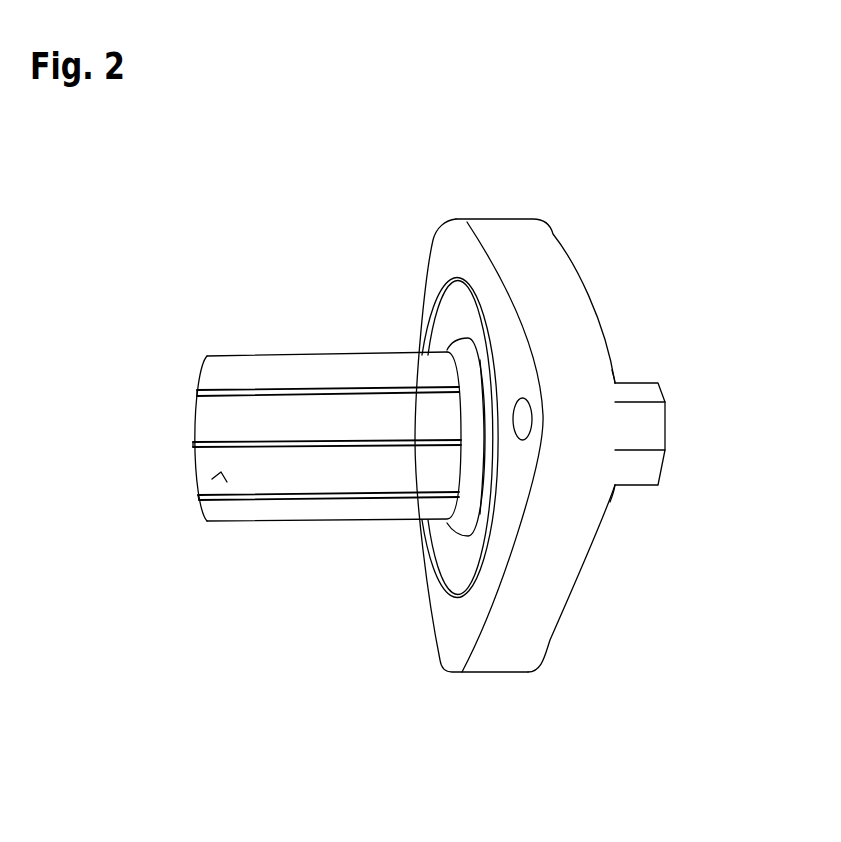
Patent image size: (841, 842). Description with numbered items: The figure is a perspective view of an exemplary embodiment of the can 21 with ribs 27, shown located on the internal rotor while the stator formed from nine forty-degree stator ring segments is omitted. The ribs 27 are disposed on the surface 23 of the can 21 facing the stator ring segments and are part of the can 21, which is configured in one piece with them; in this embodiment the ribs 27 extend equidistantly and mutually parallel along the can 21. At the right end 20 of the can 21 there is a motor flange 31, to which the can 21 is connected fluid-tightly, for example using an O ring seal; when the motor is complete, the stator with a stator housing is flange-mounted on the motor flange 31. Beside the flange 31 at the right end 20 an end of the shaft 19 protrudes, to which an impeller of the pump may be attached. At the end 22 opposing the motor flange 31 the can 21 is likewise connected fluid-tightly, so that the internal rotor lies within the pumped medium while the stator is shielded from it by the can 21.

The shaft 19 is at (640, 427).
The right end 20 is at (460, 417).
The can 21 is at (230, 377).
The end 22 is at (193, 458).
The surface 23 is at (212, 479).
The ribs 27 is at (212, 355).
The motor flange 31 is at (560, 303).